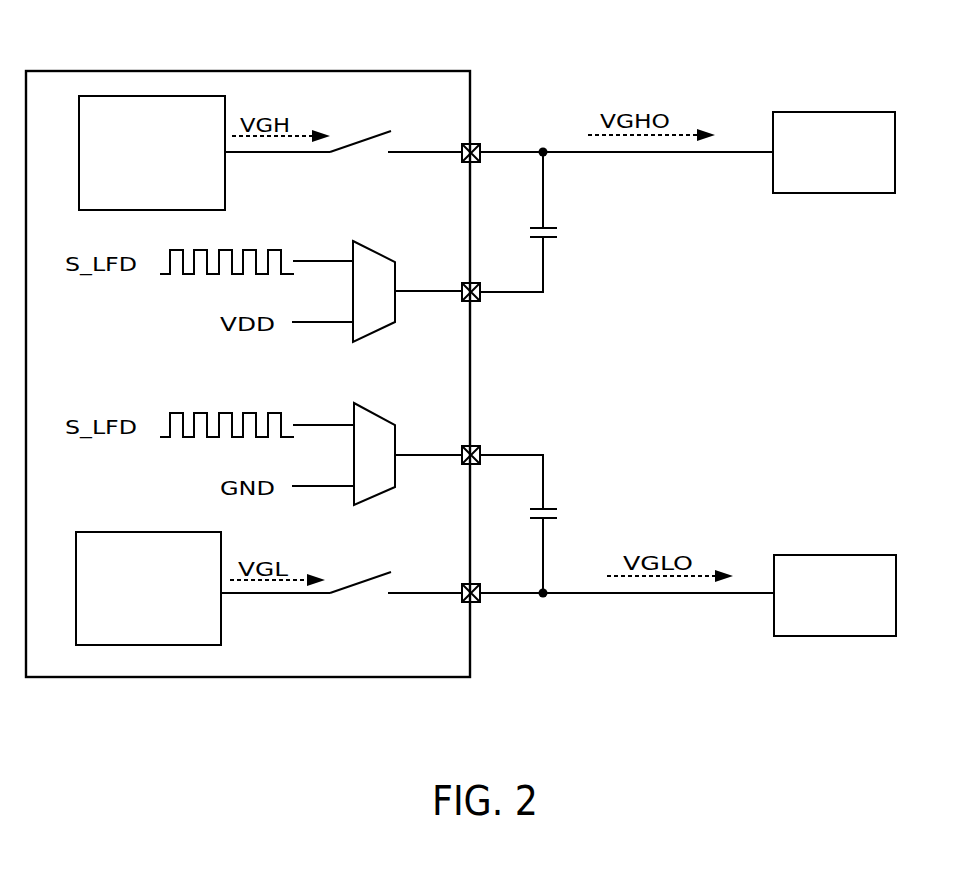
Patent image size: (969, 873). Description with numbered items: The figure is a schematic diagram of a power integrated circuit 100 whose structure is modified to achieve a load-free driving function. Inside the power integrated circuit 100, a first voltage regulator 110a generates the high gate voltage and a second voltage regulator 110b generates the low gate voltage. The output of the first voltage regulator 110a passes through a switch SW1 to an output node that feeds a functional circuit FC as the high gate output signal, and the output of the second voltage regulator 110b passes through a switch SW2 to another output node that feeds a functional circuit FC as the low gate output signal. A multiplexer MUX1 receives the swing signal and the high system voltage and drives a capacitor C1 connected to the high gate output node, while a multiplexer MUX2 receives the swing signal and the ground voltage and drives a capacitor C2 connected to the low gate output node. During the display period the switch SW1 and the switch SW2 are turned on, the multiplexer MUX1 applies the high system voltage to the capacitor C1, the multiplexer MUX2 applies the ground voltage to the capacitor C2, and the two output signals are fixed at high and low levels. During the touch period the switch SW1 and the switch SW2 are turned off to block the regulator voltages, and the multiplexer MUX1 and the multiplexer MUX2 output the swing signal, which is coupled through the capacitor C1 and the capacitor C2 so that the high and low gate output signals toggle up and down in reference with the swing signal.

The power integrated circuit 100 is at (370, 71).
The first voltage regulator 110a is at (152, 153).
The second voltage regulator 110b is at (148, 588).
The switch SW1 is at (357, 145).
The switch SW2 is at (368, 582).
The multiplexer MUX1 is at (404, 222).
The multiplexer MUX2 is at (408, 388).
The capacitor C1 is at (542, 222).
The capacitor C2 is at (543, 524).
The functional circuit FC is at (838, 112).